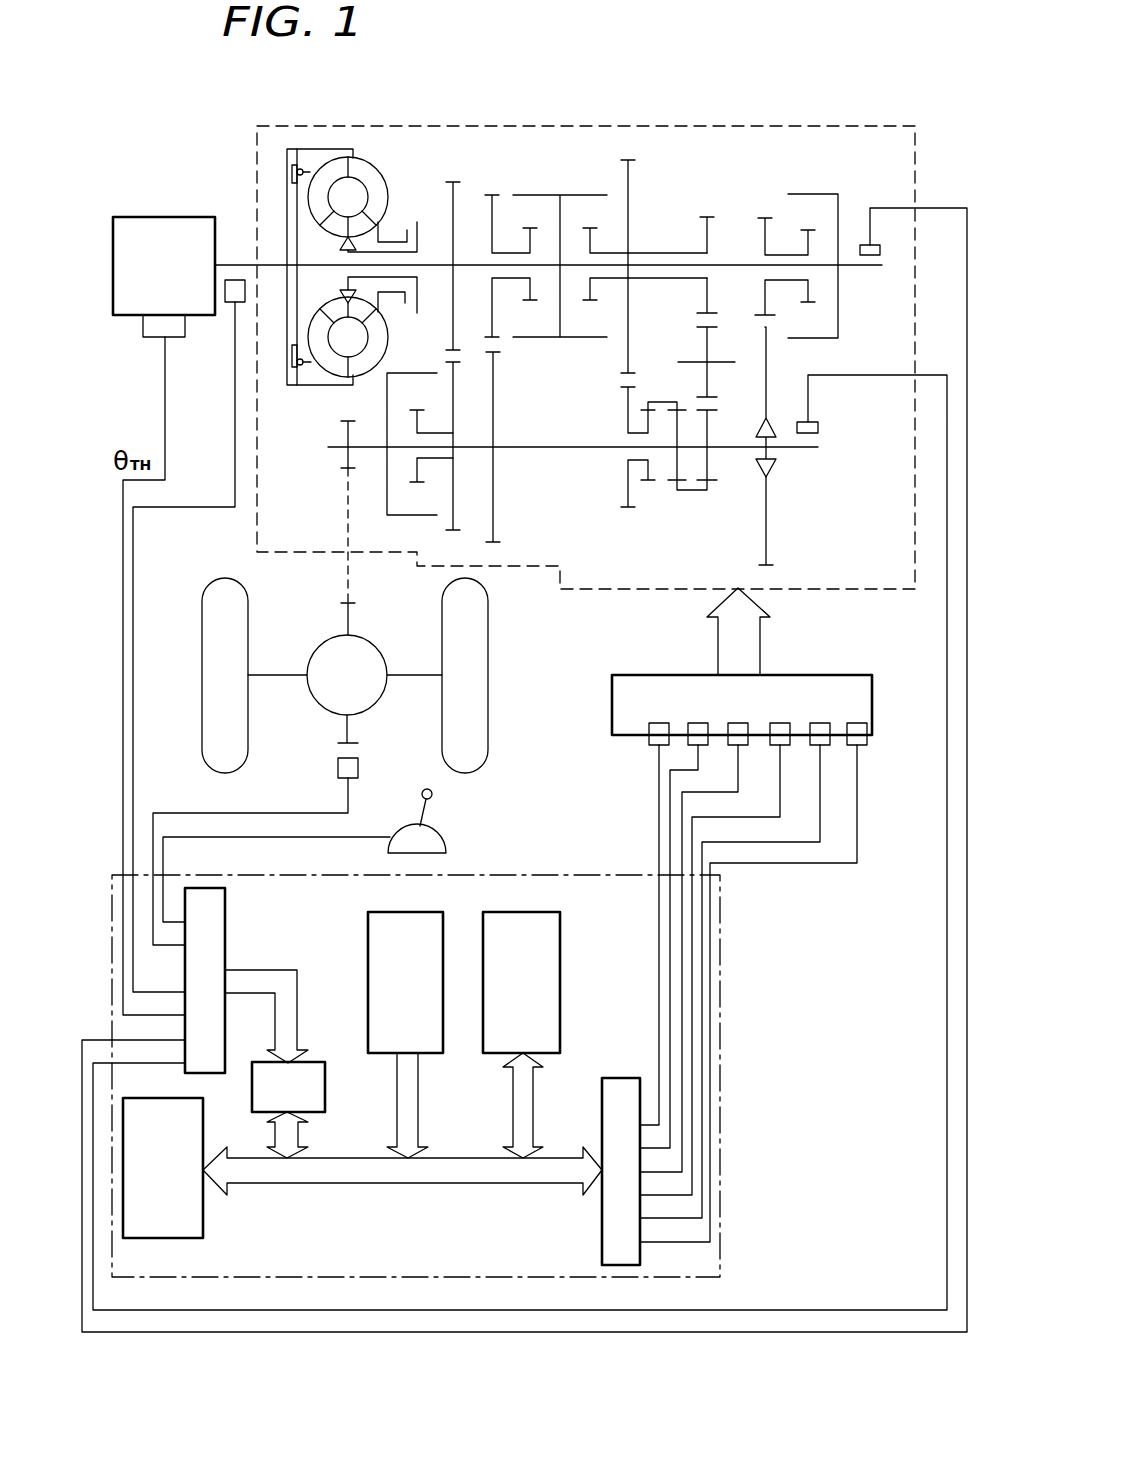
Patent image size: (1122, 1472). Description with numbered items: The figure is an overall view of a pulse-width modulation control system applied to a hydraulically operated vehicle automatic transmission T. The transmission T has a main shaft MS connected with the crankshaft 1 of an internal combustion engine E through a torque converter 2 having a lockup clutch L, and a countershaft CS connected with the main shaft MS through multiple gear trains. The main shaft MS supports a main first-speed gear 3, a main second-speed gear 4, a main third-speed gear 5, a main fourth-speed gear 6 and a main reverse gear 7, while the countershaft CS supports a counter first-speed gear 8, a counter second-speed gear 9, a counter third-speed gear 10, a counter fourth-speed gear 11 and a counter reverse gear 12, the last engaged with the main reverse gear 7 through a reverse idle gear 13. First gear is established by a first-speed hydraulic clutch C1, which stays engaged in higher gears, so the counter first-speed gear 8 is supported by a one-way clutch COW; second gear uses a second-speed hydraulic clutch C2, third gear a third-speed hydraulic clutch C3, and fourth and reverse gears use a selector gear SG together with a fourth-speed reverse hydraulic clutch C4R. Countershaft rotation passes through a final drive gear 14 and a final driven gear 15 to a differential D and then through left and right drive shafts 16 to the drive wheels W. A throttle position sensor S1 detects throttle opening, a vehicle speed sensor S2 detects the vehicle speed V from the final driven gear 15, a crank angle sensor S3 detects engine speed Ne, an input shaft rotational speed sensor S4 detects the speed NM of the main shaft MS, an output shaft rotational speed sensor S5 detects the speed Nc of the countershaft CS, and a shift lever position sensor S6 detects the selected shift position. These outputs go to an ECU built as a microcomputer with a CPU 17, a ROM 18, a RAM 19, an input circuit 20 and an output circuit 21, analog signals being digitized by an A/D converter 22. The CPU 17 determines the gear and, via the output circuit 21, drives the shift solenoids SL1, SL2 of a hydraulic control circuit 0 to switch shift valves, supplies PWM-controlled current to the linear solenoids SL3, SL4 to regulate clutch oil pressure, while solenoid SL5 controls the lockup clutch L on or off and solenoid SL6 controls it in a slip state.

The internal combustion engine E is at (147, 216).
The crankshaft 1 is at (232, 262).
The throttle position sensor S1 is at (170, 338).
The crank angle sensor S3 is at (231, 304).
The engine speed Ne is at (201, 490).
The vehicle automatic transmission T is at (698, 125).
The torque converter 2 is at (360, 158).
The lockup clutch L is at (297, 148).
The main third-speed gear 5 is at (447, 180).
The main second-speed gear 4 is at (489, 193).
The second-speed hydraulic clutch C2 is at (525, 193).
The fourth-speed reverse hydraulic clutch C4R is at (578, 194).
The main fourth-speed gear 6 is at (628, 158).
The main reverse gear 7 is at (704, 215).
The reverse idle gear 13 is at (700, 328).
The main first-speed gear 3 is at (762, 216).
The first-speed hydraulic clutch C1 is at (830, 193).
The input shaft rotational speed sensor S4 is at (864, 243).
The rotational speed of the transmission input shaft NM is at (934, 192).
The main shaft MS is at (855, 268).
The output shaft rotational speed sensor S5 is at (800, 420).
The rotational speed of the transmission output shaft Nc is at (861, 361).
The countershaft CS is at (808, 449).
The one-way clutch COW is at (772, 470).
The counter first-speed gear 8 is at (776, 565).
The counter reverse gear 12 is at (705, 492).
The selector gear SG is at (692, 500).
The counter fourth-speed gear 11 is at (629, 518).
The counter second-speed gear 9 is at (498, 547).
The counter third-speed gear 10 is at (453, 532).
The third-speed hydraulic clutch C3 is at (412, 520).
The final drive gear 14 is at (342, 458).
The final driven gear 15 is at (340, 602).
The drive wheels W is at (216, 632).
The differential D is at (368, 652).
The drive shafts 16 is at (262, 673).
The vehicle speed sensor S2 is at (360, 768).
The vehicle speed V is at (302, 803).
The shift lever position sensor S6 is at (442, 842).
The hydraulic control circuit 0 is at (875, 720).
The shift solenoid SL1 is at (735, 745).
The shift solenoid SL2 is at (780, 745).
The linear solenoid SL3 is at (655, 723).
The linear solenoid SL4 is at (695, 745).
The lockup clutch solenoid SL5 is at (825, 745).
The lockup clutch slip solenoid SL6 is at (860, 746).
The electronic control unit ECU is at (722, 987).
The input circuit 20 is at (226, 930).
The ROM 18 is at (368, 958).
The RAM 19 is at (565, 952).
The A/D converter 22 is at (326, 1085).
The CPU 17 is at (207, 1140).
The output circuit 21 is at (600, 1230).